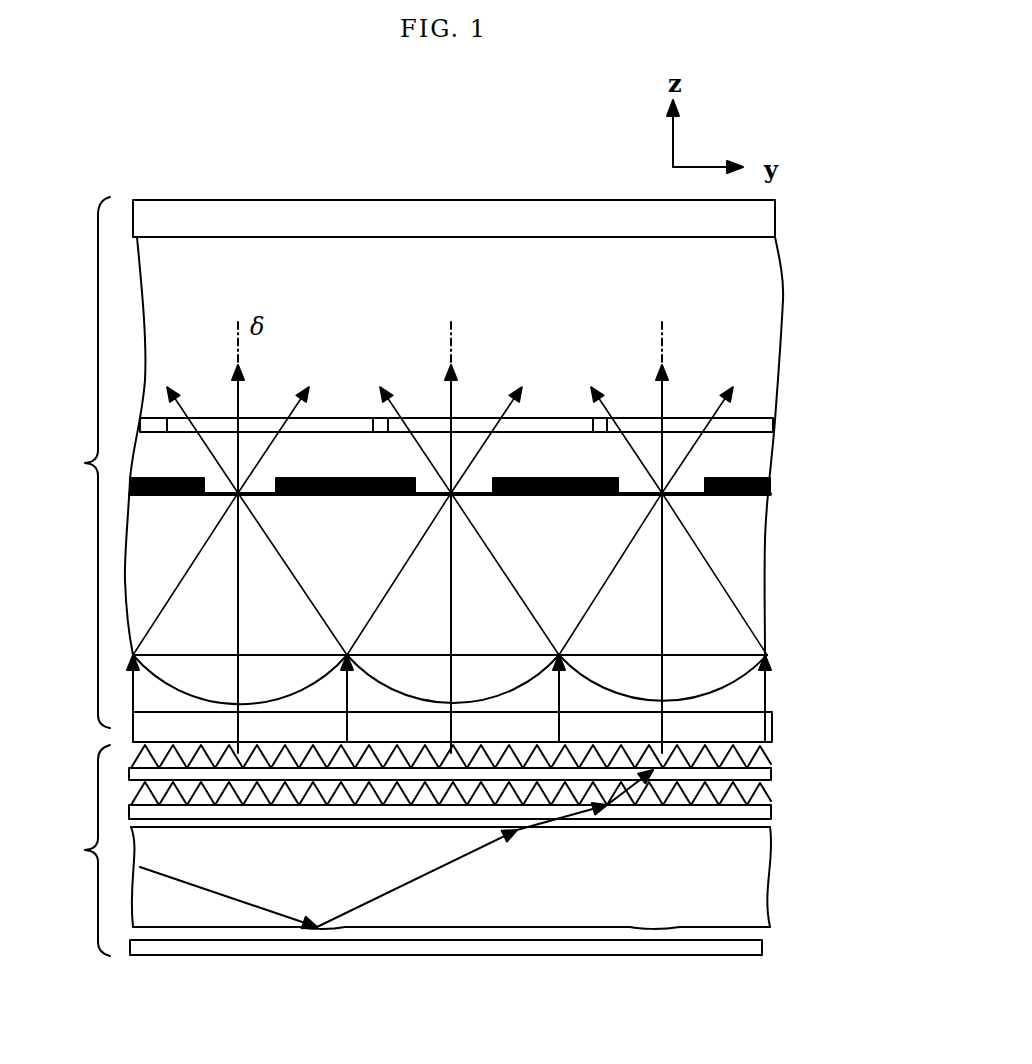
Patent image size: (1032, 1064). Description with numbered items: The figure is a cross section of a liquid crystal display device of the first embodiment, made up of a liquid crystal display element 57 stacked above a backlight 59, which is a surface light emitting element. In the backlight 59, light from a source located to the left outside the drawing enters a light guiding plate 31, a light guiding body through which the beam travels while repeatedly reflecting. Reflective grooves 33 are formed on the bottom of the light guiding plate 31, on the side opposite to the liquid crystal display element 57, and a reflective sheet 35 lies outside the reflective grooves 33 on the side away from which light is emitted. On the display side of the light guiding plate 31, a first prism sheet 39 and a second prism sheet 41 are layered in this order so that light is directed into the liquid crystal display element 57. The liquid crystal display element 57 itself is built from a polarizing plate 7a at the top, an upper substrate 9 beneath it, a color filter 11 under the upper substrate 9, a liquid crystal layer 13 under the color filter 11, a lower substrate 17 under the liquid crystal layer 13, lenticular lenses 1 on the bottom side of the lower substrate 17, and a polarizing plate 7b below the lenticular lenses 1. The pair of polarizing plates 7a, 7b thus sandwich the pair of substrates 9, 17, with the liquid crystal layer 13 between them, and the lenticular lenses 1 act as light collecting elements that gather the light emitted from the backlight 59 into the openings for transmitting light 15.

The lenticular lenses 1 is at (735, 657).
The polarizing plate 7a is at (758, 223).
The polarizing plate 7b is at (757, 732).
The upper substrate 9 is at (765, 363).
The color filter 11 is at (760, 430).
The liquid crystal layer 13 is at (758, 465).
The openings for transmitting light 15 is at (705, 498).
The lower substrate 17 is at (745, 592).
The light guiding plate 31 is at (757, 892).
The reflective grooves 33 is at (513, 928).
The reflective sheet 35 is at (750, 948).
The first prism sheet 39 is at (772, 797).
The second prism sheet 41 is at (768, 762).
The liquid crystal display element 57 is at (76, 462).
The backlight 59 is at (76, 850).